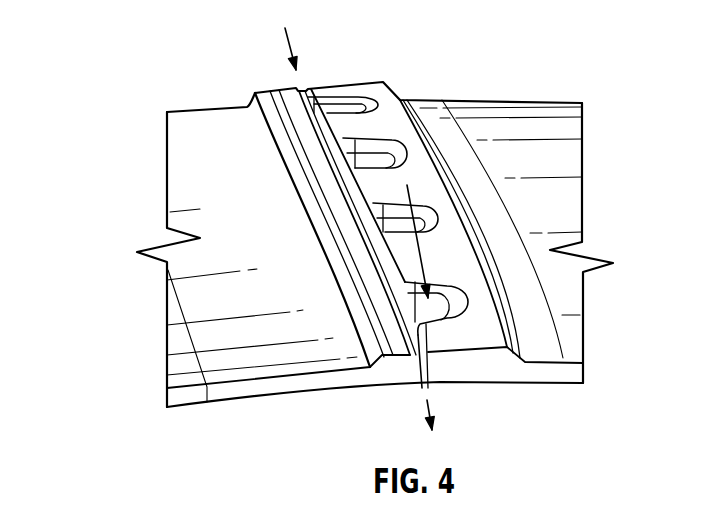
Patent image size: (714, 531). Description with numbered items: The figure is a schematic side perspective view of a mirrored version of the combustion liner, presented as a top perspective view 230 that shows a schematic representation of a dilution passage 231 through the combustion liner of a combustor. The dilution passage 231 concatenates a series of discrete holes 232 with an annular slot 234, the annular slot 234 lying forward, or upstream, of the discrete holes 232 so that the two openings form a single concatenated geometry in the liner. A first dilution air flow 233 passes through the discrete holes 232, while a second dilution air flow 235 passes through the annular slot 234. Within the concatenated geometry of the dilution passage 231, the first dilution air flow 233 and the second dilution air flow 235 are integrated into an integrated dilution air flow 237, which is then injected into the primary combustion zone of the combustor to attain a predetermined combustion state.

The top perspective view 230 is at (118, 166).
The dilution passage 231 is at (363, 160).
The discrete holes 232 is at (438, 312).
The first dilution air flow 233 is at (426, 280).
The annular slot 234 is at (298, 89).
The second dilution air flow 235 is at (291, 48).
The integrated dilution air flow 237 is at (434, 410).